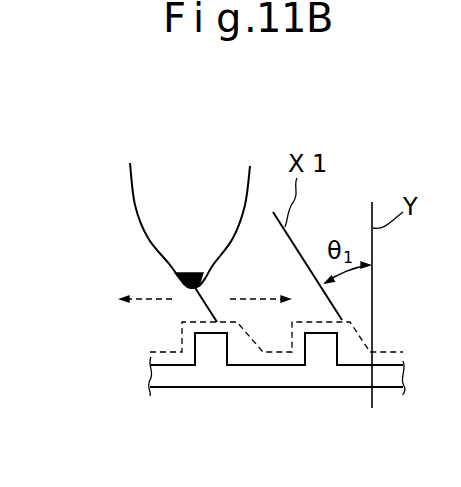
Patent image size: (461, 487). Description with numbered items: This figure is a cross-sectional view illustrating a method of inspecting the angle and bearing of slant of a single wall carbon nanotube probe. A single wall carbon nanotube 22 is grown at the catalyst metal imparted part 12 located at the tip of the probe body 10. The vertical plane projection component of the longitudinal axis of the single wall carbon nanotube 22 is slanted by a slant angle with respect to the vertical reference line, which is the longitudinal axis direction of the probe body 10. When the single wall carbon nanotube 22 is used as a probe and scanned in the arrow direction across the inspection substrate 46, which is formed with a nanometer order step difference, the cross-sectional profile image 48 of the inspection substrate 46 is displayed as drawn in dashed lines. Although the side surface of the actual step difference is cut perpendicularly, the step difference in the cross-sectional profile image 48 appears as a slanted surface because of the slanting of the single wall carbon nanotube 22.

The probe body 10 is at (203, 193).
The catalyst metal imparted part 12 is at (190, 273).
The single wall carbon nanotube 22 is at (207, 299).
The inspection substrate 46 is at (136, 376).
The cross-sectional profile image 48 is at (166, 350).